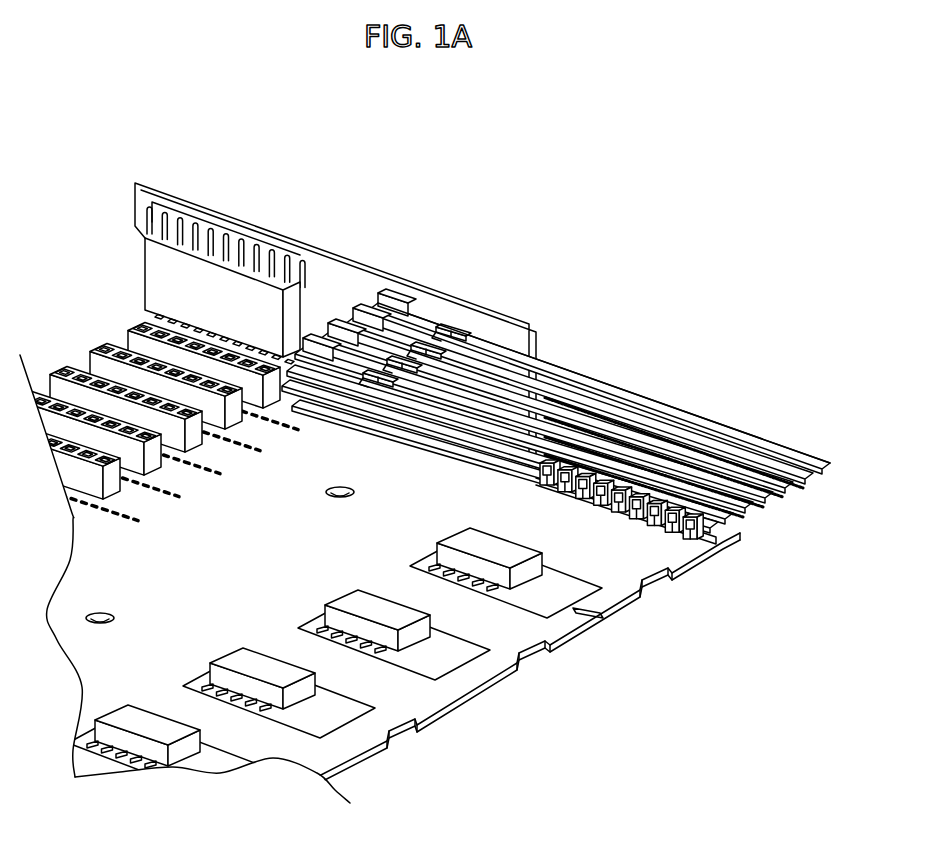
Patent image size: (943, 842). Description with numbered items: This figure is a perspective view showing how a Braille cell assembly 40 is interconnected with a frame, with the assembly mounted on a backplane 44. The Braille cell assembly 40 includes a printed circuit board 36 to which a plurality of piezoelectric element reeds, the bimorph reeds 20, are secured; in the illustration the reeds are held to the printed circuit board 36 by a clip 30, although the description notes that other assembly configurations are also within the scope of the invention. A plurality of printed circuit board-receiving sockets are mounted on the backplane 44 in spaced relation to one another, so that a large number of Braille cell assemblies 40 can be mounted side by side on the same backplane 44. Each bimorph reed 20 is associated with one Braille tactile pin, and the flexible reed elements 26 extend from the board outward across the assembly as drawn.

The bimorph reed 20 is at (720, 412).
The flex circuit connector 26 is at (388, 296).
The clip 30 is at (462, 330).
The printed circuit board 36 is at (325, 247).
The Braille cell assembly 40 is at (638, 280).
The backplane 44 is at (219, 569).